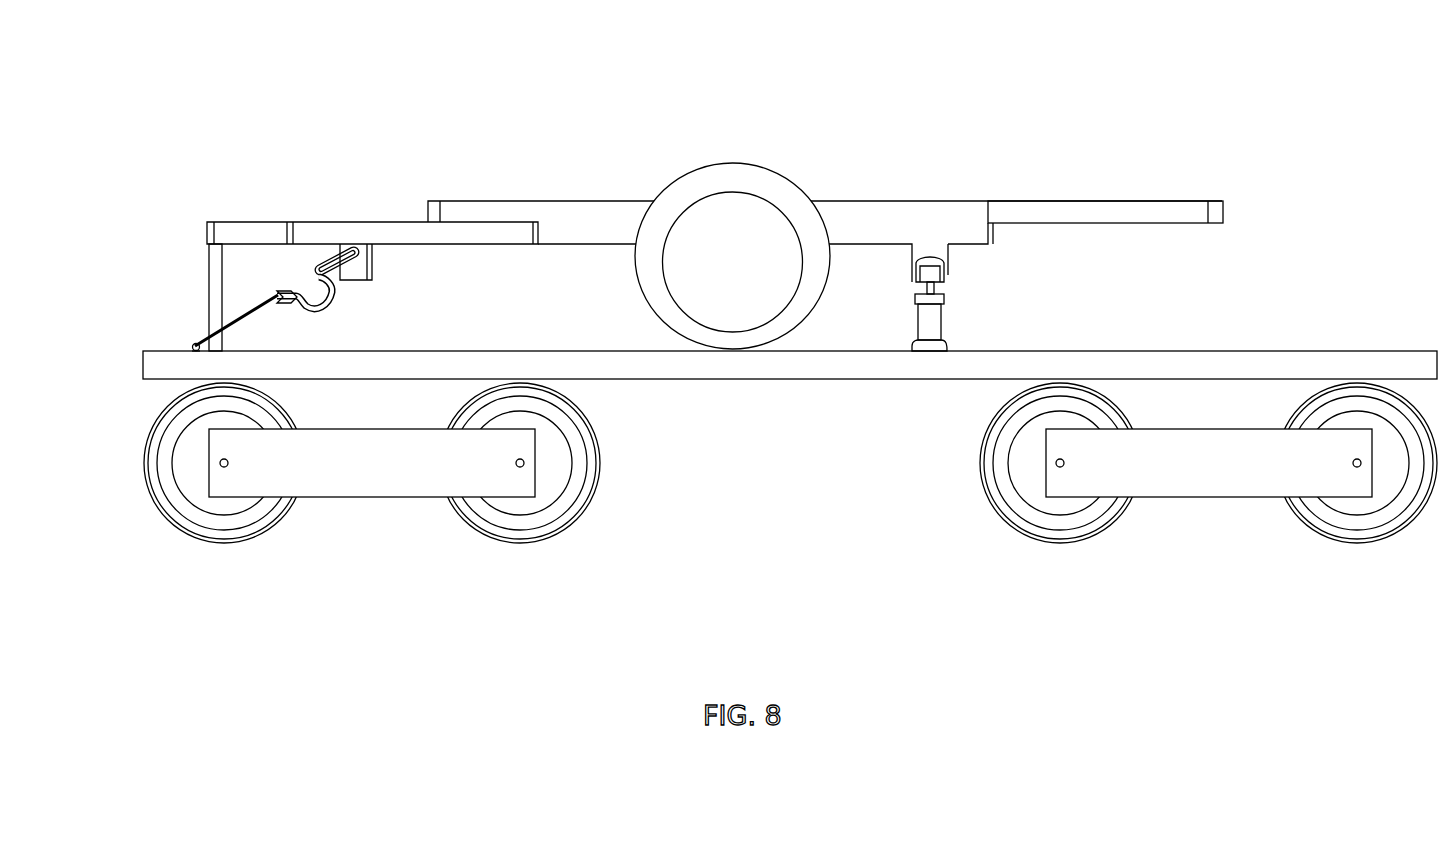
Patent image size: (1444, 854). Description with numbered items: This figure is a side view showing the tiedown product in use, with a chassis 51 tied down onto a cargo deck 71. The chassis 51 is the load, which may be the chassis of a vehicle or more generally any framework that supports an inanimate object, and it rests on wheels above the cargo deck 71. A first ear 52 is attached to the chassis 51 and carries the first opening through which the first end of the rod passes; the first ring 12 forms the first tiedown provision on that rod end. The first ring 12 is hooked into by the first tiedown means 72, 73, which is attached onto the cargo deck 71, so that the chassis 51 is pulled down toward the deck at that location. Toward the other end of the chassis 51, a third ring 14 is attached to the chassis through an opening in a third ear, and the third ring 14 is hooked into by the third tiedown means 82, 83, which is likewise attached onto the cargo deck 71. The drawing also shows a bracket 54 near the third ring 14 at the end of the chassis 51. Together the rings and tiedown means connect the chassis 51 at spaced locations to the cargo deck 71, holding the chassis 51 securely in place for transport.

The first ring 12 is at (891, 293).
The third ring 14 is at (340, 263).
The chassis 51 is at (1117, 201).
The first ear 52 is at (912, 265).
The mounting bracket 54 is at (373, 263).
The cargo deck 71 is at (1300, 351).
The first tiedown means 72 is at (915, 320).
The first tiedown means 73 is at (913, 282).
The third tiedown means 82 is at (243, 315).
The third tiedown means 83 is at (323, 268).